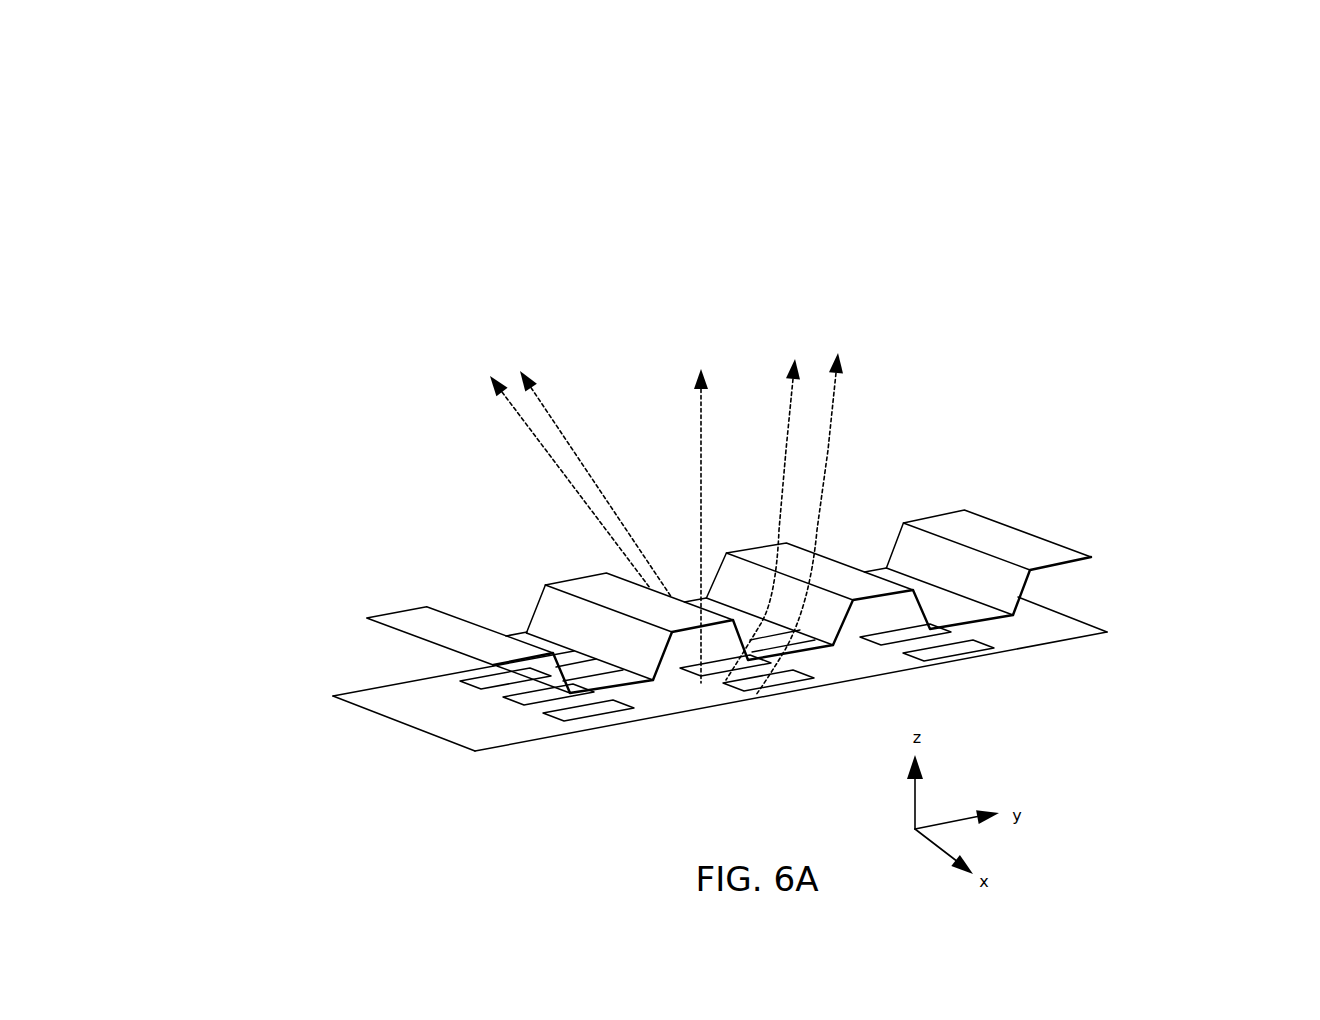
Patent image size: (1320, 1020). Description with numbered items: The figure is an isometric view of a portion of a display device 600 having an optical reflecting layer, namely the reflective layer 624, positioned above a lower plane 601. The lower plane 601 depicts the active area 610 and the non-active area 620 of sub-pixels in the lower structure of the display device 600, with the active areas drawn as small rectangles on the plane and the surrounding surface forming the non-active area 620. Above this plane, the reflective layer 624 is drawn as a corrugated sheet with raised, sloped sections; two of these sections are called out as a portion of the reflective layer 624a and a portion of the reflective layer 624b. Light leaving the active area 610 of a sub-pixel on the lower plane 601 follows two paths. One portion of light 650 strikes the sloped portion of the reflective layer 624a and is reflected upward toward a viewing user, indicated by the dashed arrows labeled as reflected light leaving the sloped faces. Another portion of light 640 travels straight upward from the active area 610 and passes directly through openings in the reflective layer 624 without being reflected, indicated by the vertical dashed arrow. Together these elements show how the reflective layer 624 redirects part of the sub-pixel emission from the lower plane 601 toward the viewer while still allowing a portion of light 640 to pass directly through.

The display device 600 is at (161, 75).
The lower plane 601 is at (1090, 613).
The active area 610 is at (581, 717).
The non-active area 620 is at (494, 710).
The reflective layer 624 is at (1013, 528).
The portion of reflective layer 624a is at (547, 615).
The portion of reflective layer 624b is at (578, 587).
The portion of light 640 is at (679, 470).
The portion of light 650 is at (662, 485).